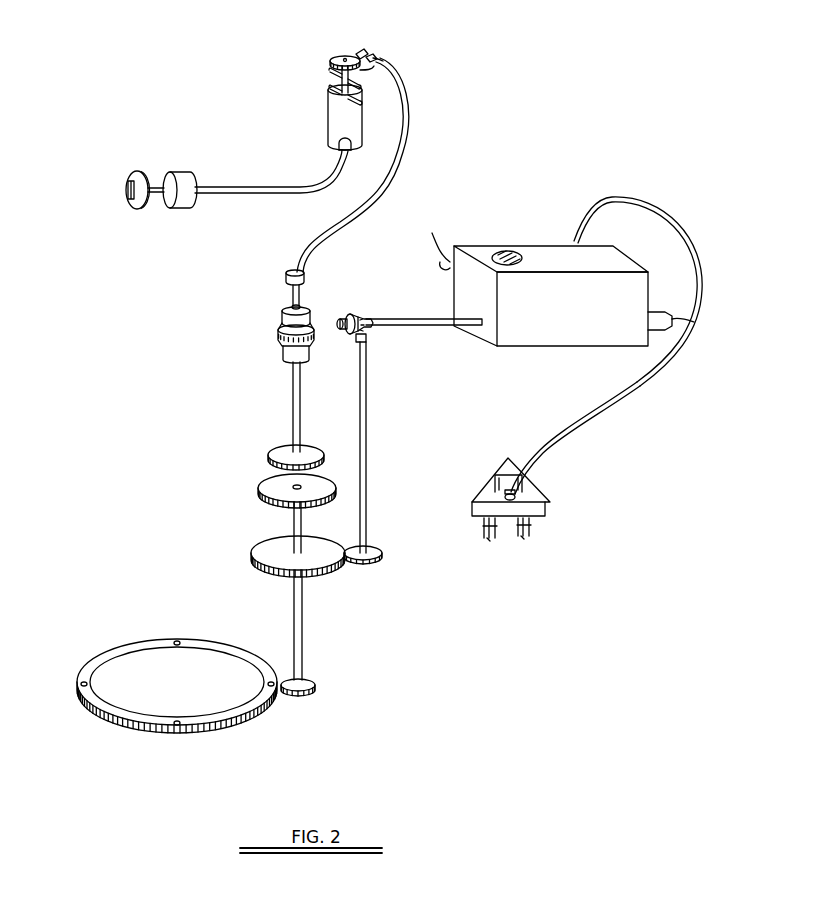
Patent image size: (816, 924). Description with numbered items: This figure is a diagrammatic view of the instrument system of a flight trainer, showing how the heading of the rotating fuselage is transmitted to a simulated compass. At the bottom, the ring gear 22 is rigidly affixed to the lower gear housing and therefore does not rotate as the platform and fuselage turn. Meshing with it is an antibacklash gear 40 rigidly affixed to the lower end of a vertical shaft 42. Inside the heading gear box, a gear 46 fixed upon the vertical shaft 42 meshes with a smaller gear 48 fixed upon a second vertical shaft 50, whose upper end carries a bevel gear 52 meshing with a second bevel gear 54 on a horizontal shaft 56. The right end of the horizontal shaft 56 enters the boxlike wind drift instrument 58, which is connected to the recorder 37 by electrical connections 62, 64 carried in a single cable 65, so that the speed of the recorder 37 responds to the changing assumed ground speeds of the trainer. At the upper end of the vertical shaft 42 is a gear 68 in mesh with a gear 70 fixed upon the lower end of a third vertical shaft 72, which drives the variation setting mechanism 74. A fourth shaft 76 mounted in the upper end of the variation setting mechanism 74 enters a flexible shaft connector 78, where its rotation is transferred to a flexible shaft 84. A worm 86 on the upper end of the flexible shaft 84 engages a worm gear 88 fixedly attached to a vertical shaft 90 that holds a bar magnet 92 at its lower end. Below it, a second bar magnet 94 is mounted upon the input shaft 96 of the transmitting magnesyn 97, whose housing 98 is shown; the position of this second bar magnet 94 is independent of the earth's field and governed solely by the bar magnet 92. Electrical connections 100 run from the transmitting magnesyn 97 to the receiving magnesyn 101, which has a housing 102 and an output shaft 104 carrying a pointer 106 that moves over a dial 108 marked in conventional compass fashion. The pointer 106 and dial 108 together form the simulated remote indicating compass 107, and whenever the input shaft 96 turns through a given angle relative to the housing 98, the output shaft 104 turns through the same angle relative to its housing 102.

The ring gear 22 is at (93, 664).
The recorder 37 is at (554, 500).
The antibacklash gear 40 is at (316, 683).
The vertical shaft 42 is at (294, 519).
The gear 46 is at (254, 553).
The smaller gear 48 is at (381, 559).
The second vertical shaft 50 is at (366, 431).
The bevel gear 52 is at (362, 332).
The second bevel gear 54 is at (357, 316).
The horizontal shaft 56 is at (421, 319).
The wind drift instrument 58 is at (488, 244).
The electrical connection 62 is at (656, 213).
The electrical connection 64 is at (687, 320).
The cable 65 is at (576, 428).
The gear 68 is at (262, 484).
The gear 70 is at (275, 450).
The third vertical shaft 72 is at (294, 376).
The variation setting mechanism 74 is at (281, 318).
The fourth shaft 76 is at (300, 299).
The flexible shaft connector 78 is at (305, 276).
The flexible shaft 84 is at (399, 158).
The worm 86 is at (358, 54).
The worm gear 88 is at (337, 60).
The vertical shaft 90 is at (362, 72).
The bar magnet 92 is at (335, 70).
The second bar magnet 94 is at (332, 88).
The input shaft 96 is at (340, 95).
The transmitting magnesyn 97 is at (359, 125).
The housing 98 is at (339, 146).
The electrical connections 100 is at (246, 194).
The receiving magnesyn 101 is at (182, 207).
The housing 102 is at (185, 197).
The output shaft 104 is at (156, 193).
The pointer 106 is at (128, 185).
The simulated remote indicating compass 107 is at (127, 205).
The dial 108 is at (104, 187).